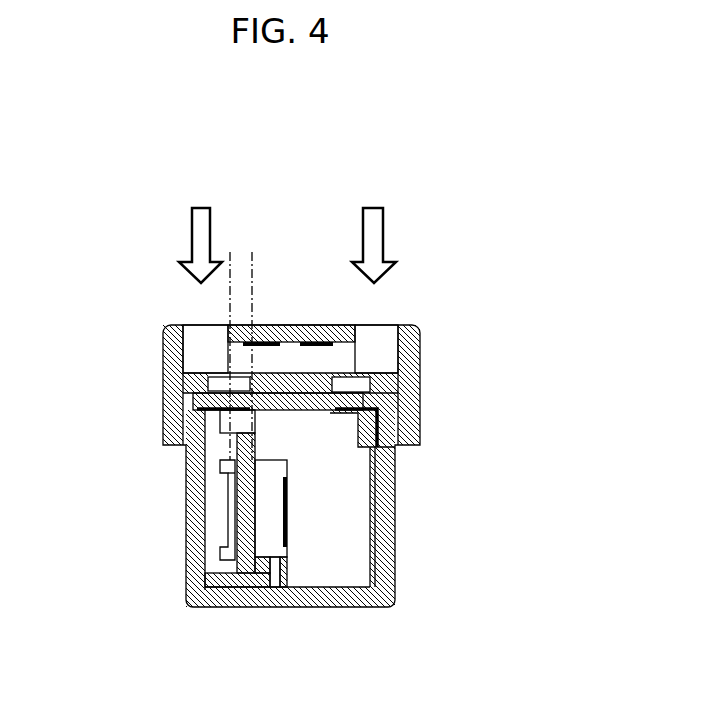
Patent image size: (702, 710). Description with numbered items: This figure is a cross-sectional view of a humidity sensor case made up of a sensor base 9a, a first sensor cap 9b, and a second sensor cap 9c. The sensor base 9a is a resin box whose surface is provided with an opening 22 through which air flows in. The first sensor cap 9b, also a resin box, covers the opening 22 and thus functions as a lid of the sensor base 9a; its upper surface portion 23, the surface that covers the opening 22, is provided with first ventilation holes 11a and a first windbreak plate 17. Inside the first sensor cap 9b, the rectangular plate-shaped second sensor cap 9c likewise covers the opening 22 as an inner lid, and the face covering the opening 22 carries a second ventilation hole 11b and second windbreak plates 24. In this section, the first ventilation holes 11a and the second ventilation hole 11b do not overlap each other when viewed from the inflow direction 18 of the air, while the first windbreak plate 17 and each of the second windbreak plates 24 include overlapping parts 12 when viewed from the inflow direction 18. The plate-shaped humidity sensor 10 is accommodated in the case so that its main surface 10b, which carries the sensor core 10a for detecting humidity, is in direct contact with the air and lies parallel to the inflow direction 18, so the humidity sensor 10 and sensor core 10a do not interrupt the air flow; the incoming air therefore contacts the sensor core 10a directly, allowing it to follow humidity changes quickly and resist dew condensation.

The sensor base 9a is at (380, 600).
The first sensor cap 9b is at (173, 355).
The second sensor cap 9c is at (377, 407).
The humidity sensor 10 is at (268, 547).
The sensor core 10a is at (287, 517).
The main surface 10b is at (288, 552).
The first ventilation holes 11a is at (193, 327).
The second ventilation hole 11b is at (297, 403).
The overlapping parts 12 is at (280, 381).
The first windbreak plate 17 is at (293, 327).
The inflow direction 18 is at (374, 222).
The opening 22 is at (283, 425).
The upper surface portion 23 is at (267, 325).
The second windbreak plates 24 is at (280, 382).